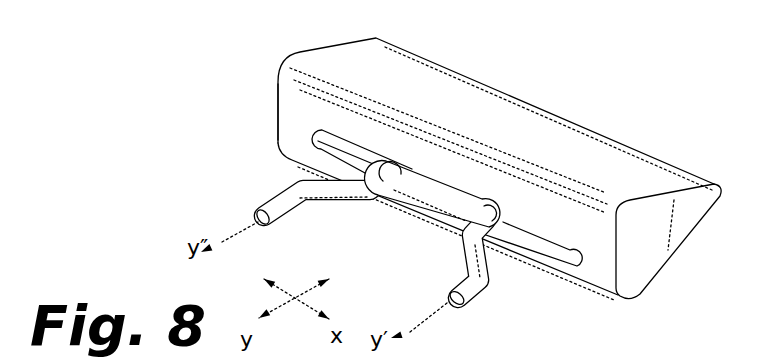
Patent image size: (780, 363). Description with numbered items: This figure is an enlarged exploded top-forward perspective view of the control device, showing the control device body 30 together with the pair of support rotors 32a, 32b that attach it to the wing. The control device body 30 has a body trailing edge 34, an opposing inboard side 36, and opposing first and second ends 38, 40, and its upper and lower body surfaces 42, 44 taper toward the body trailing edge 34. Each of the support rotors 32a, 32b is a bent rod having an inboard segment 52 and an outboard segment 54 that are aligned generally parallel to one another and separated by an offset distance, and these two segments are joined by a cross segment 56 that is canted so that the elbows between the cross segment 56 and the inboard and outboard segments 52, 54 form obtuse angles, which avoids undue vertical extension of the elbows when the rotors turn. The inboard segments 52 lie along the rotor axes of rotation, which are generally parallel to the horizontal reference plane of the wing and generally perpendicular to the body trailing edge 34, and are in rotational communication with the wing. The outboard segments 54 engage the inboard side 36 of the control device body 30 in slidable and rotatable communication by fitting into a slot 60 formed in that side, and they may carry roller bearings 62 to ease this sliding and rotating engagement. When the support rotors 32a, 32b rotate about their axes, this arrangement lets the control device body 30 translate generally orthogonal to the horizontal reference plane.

The control device body 30 is at (455, 92).
The support rotor 32a is at (277, 218).
The support rotor 32b is at (489, 284).
The body trailing edge 34 is at (522, 104).
The inboard side 36 is at (598, 262).
The first end 38 is at (321, 50).
The second end 40 is at (683, 228).
The upper body surface 42 is at (584, 132).
The lower body surface 44 is at (661, 274).
The inboard segment 52 is at (279, 197).
The outboard segment 54 is at (312, 141).
The cross segment 56 is at (336, 199).
The slot 60 is at (428, 190).
The roller bearing 62 is at (412, 168).